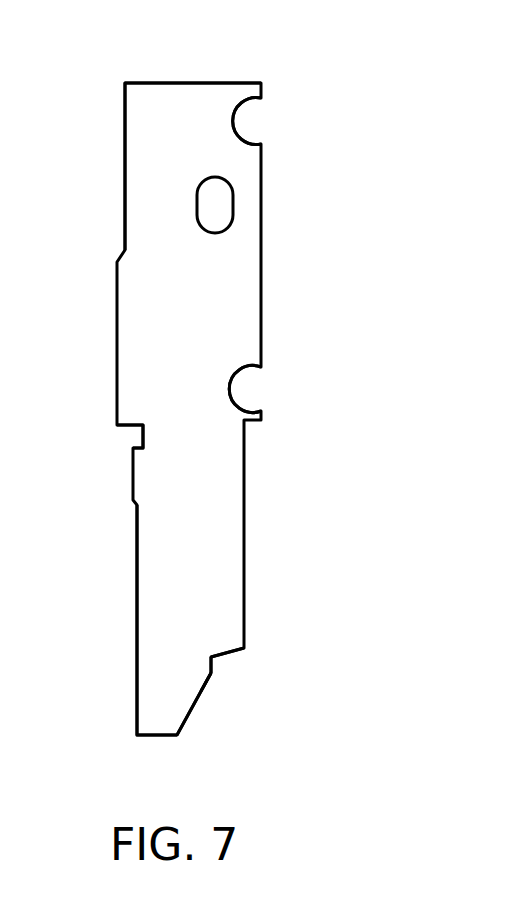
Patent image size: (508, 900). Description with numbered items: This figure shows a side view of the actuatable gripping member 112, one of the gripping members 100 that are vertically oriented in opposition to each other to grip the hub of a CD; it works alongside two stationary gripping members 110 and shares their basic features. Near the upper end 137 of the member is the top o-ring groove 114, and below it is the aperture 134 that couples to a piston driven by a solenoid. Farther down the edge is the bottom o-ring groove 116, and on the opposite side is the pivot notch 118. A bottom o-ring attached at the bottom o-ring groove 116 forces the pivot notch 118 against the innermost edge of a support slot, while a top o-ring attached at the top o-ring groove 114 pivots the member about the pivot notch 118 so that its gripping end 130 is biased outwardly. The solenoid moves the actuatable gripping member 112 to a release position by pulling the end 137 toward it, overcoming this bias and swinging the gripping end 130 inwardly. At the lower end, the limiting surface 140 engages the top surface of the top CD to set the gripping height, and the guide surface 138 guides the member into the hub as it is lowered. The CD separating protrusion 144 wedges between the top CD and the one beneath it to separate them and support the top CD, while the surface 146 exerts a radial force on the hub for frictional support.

The gripping member 100 is at (285, 371).
The actuatable gripping member 112 is at (189, 409).
The stationary gripping member 110 is at (31, 33).
The end 137 is at (141, 133).
The top o-ring groove 114 is at (240, 122).
The aperture 134 is at (217, 205).
The bottom o-ring groove 116 is at (240, 388).
The pivot notch 118 is at (140, 442).
The gripping end 130 is at (157, 688).
The limiting surface 140 is at (245, 649).
The surface 146 is at (213, 666).
The CD separating protrusion 144 is at (213, 675).
The guide surface 138 is at (187, 720).